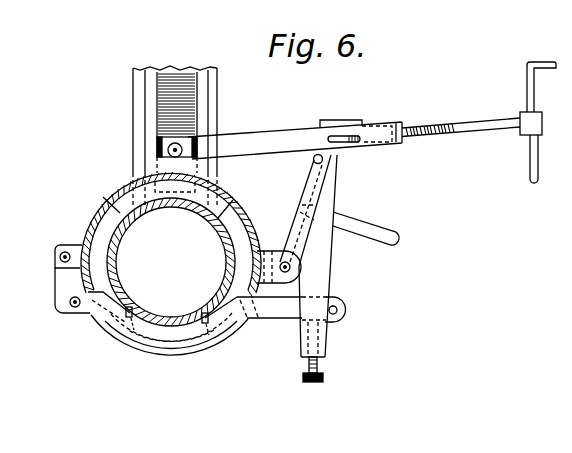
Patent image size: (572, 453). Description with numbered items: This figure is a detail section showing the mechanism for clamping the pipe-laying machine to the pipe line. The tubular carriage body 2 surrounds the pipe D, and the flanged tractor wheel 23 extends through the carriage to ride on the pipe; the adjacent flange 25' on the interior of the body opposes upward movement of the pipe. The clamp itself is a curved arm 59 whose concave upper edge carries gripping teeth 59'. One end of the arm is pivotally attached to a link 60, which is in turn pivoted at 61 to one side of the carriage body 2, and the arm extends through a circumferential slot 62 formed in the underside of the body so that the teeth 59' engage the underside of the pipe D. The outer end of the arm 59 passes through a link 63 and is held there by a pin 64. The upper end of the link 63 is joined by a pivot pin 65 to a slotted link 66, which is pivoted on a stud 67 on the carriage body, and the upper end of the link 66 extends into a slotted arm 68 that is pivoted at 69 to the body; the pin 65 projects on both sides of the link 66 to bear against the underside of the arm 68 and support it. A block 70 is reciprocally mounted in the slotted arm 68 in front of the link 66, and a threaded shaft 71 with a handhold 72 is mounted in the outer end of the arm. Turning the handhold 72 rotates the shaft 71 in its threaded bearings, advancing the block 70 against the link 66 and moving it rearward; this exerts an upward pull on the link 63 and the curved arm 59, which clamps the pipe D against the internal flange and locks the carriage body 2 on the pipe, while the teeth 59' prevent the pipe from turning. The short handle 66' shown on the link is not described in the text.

The carriage body 2 is at (87, 218).
The pipe D is at (117, 259).
The jaw 25' is at (145, 198).
The tractor wheel 23 is at (145, 97).
The pivot 69 is at (160, 142).
The slotted arm 68 is at (278, 135).
The block 70 is at (342, 128).
The threaded shaft 71 is at (448, 128).
The handhold 72 is at (533, 93).
The pivot pin 65 is at (312, 160).
The slotted link 66 is at (298, 210).
The handle 66' is at (366, 221).
The stud 67 is at (277, 250).
The link 63 is at (323, 265).
The pin 64 is at (337, 308).
The circumferential slot 62 is at (252, 291).
The curved arm 59 is at (168, 336).
The gripping teeth 59' is at (159, 336).
The pivot 61 is at (59, 257).
The link 60 is at (60, 300).